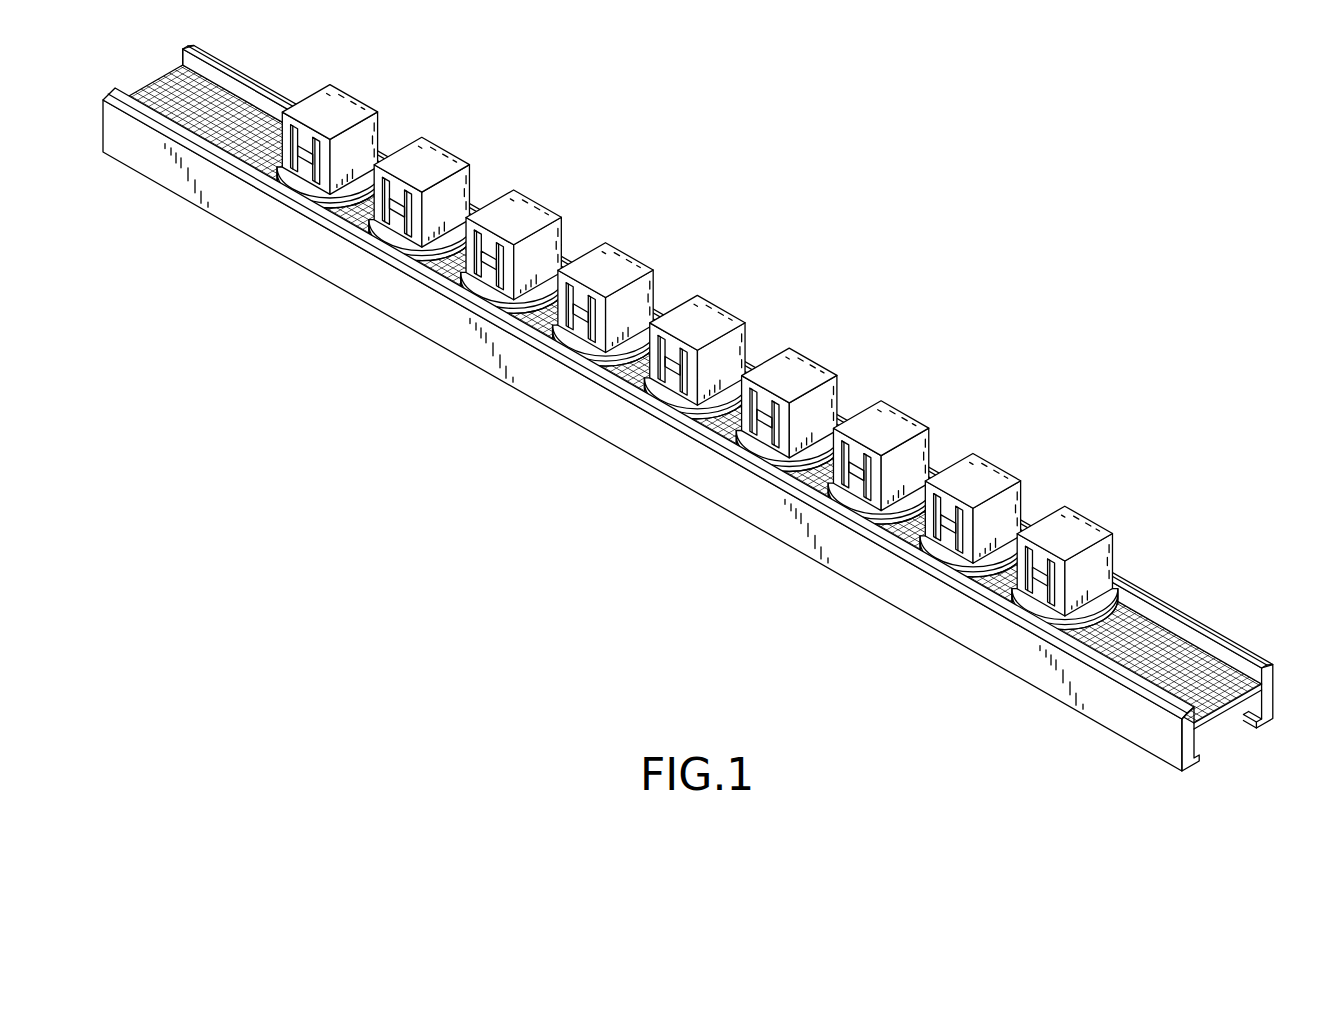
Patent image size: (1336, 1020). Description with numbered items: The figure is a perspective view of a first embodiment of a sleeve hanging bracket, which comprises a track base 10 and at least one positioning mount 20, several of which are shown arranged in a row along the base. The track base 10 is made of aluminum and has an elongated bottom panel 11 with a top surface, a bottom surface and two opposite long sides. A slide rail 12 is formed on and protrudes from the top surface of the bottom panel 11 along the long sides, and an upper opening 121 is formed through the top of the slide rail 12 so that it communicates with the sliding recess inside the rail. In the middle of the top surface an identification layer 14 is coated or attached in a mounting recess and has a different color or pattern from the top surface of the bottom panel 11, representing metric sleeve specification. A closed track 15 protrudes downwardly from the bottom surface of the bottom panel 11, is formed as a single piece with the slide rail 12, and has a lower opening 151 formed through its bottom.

The track base 10 is at (605, 458).
The bottom panel 11 is at (1222, 658).
The slide rail 12 is at (1200, 610).
The upper opening 121 is at (1148, 611).
The identification layer 14 is at (1163, 676).
The closed track 15 is at (1206, 757).
The lower opening 151 is at (1246, 712).
The positioning mount 20 is at (650, 254).